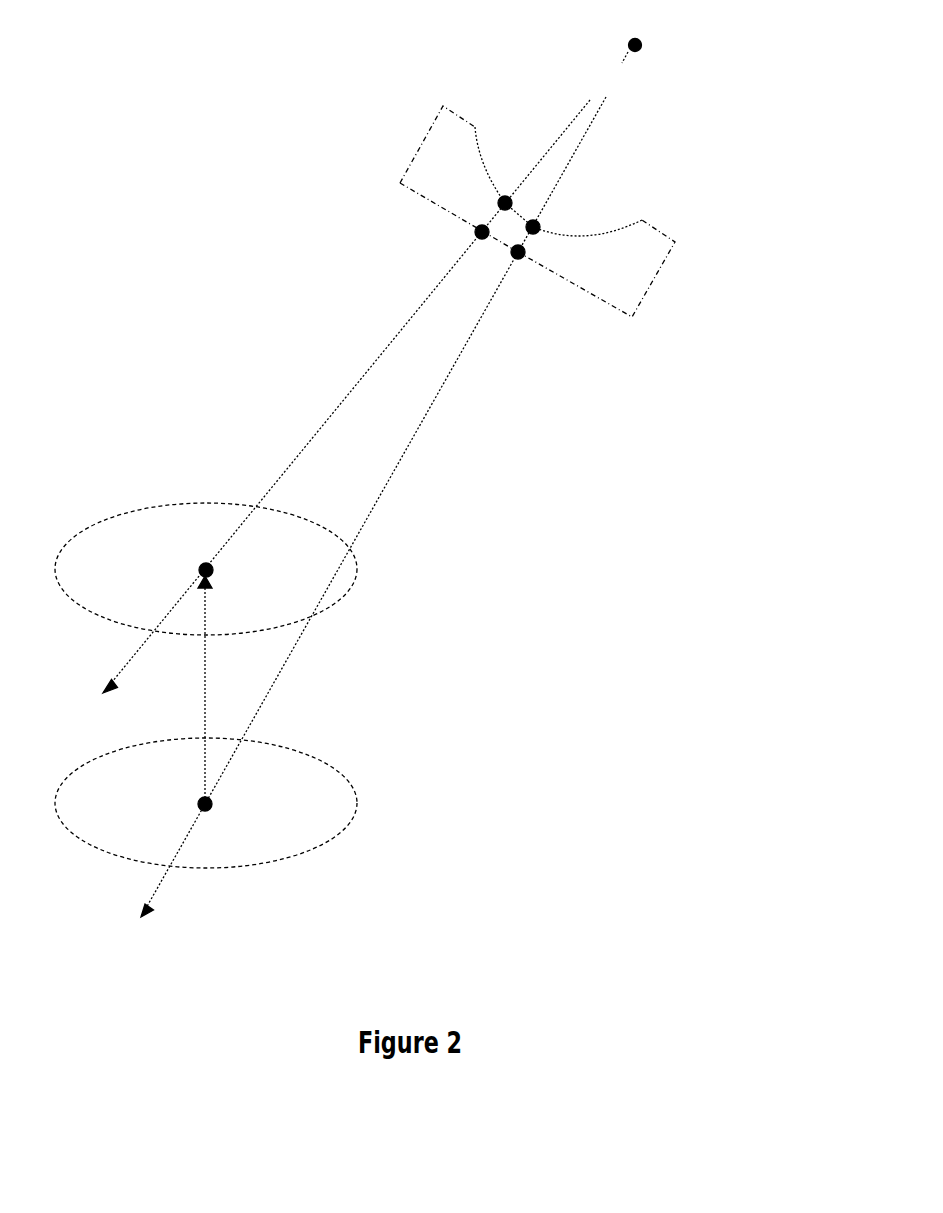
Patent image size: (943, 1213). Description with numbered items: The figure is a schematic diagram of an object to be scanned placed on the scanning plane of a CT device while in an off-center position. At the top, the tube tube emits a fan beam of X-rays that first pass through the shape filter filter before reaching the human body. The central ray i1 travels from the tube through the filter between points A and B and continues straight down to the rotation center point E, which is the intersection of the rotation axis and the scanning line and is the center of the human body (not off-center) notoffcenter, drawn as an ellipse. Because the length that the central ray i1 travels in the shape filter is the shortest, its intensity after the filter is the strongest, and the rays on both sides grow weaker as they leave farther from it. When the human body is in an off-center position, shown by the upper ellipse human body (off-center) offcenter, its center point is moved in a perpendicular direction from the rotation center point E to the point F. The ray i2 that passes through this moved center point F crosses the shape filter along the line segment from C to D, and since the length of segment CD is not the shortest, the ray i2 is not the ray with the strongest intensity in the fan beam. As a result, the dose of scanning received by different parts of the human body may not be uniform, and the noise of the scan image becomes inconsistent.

The point A is at (542, 222).
The point B is at (518, 271).
The point C is at (505, 193).
The point D is at (471, 236).
The rotation center point E is at (279, 807).
The center point of human body F is at (272, 670).
The element tube is at (627, 66).
The shape filter is at (592, 211).
The central ray i1 is at (361, 525).
The ray i2 is at (326, 412).
The human body (off-center) offcenter is at (271, 569).
The human body (not off-center) notoffcenter is at (291, 803).